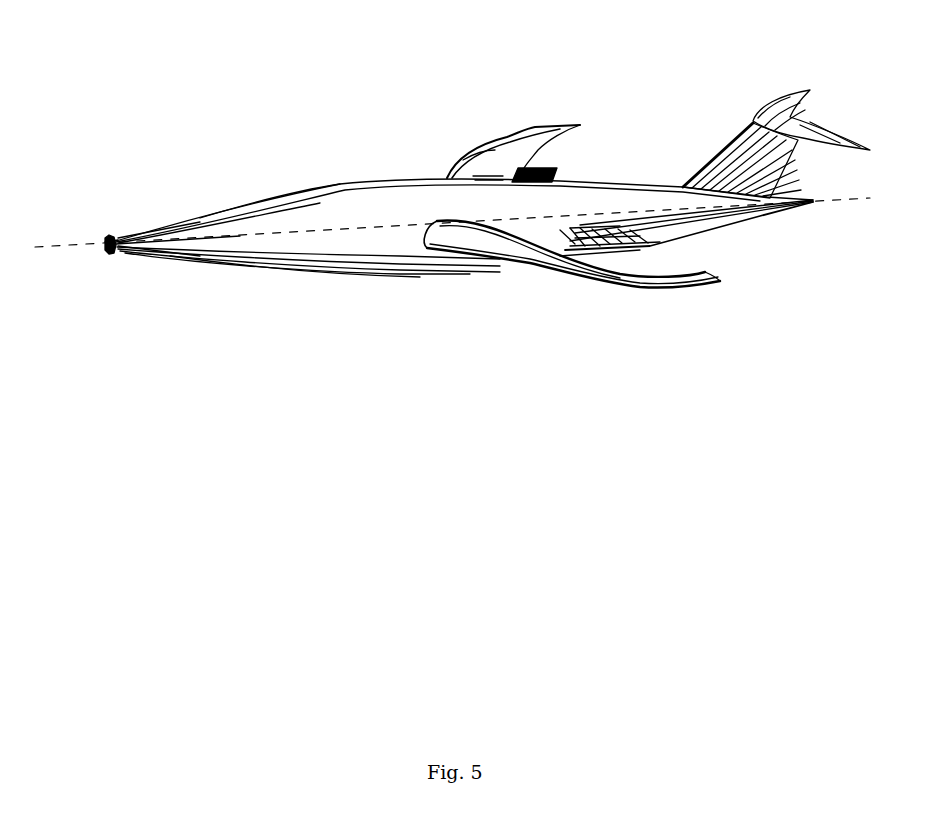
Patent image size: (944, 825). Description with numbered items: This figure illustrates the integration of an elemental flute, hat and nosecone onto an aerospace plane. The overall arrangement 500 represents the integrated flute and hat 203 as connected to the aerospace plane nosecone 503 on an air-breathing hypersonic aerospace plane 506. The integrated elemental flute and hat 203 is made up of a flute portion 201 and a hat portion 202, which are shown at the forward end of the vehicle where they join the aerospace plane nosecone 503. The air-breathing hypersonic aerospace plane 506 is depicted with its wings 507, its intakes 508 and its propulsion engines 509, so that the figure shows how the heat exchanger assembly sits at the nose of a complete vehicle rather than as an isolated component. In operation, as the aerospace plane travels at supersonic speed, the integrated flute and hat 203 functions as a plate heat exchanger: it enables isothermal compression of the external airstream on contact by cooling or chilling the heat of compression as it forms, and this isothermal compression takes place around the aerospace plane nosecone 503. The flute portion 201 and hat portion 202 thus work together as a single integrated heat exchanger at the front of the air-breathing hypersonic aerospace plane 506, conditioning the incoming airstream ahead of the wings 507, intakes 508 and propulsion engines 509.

The integrated flute and hat connected to the aerospace plane nosecone 500 is at (483, 350).
The flute portion 201 is at (118, 237).
The hat portion 202 is at (160, 228).
The integrated elemental flute and hat 203 is at (148, 247).
The aerospace plane nosecone 503 is at (160, 247).
The air-breathing hypersonic aerospace plane 506 is at (340, 183).
The wings 507 is at (508, 137).
The intakes 508 is at (472, 243).
The propulsion engines 509 is at (557, 172).